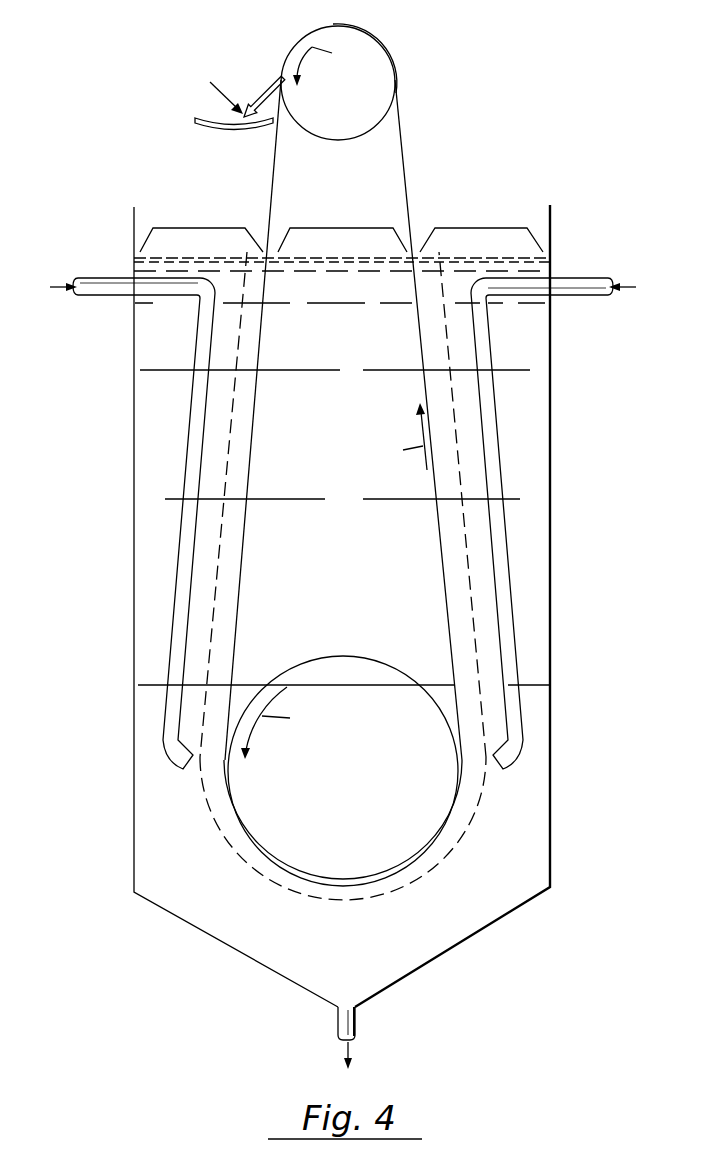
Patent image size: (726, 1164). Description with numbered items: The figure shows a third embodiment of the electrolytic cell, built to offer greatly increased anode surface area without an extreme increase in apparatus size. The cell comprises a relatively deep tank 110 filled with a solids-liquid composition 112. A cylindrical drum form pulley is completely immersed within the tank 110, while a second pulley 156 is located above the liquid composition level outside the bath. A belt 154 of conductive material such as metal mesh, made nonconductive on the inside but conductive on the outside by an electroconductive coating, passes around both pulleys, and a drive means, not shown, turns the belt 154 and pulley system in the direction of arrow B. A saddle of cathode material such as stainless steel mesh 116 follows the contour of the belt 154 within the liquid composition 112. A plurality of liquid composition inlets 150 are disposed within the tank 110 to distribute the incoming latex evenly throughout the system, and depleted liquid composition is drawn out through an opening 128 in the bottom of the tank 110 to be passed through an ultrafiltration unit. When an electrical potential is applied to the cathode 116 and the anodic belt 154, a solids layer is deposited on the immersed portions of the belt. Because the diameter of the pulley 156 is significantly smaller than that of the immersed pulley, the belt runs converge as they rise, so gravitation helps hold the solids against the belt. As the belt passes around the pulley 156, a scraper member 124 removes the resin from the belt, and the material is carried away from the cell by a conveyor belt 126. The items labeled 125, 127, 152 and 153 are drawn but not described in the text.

The tank 110 is at (553, 722).
The solids-liquid composition 112 is at (518, 870).
The saddle of cathode material 116 is at (263, 890).
The scraper member 124 is at (281, 76).
The left inlet pipe 125 is at (110, 296).
The conveyor belt 126 is at (207, 128).
The right inlet pipe 127 is at (573, 296).
The opening 128 is at (358, 1027).
The liquid composition inlets 150 is at (180, 577).
The hydrogen collection hoods 152 is at (175, 228).
The oxygen collection hood 153 is at (317, 228).
The belt 154 is at (242, 558).
The second pulley 156 is at (372, 133).